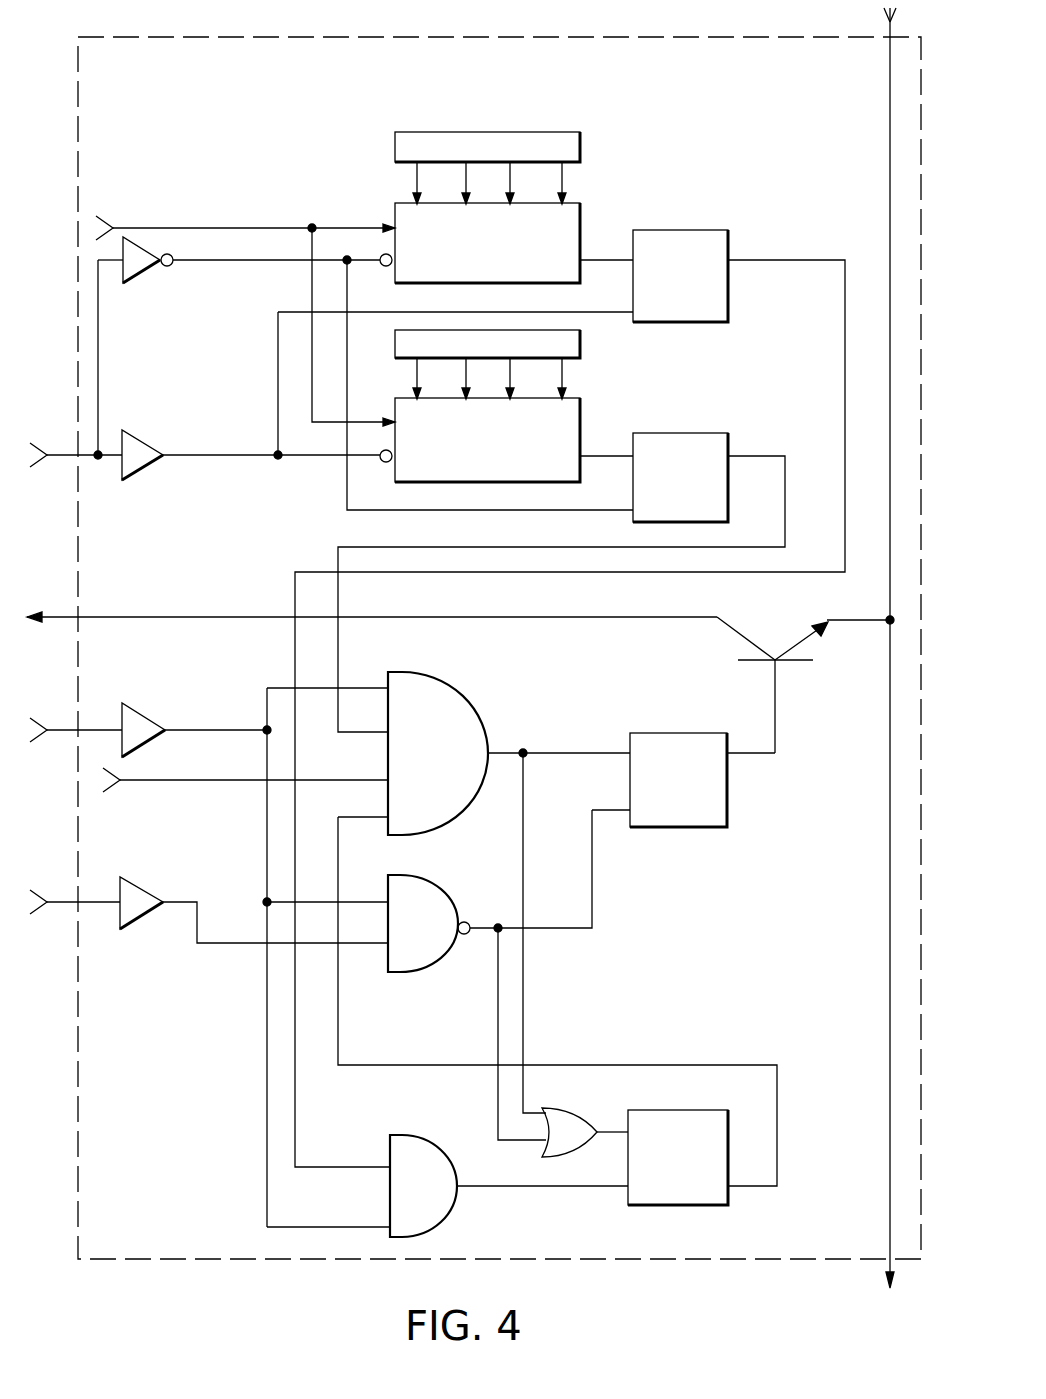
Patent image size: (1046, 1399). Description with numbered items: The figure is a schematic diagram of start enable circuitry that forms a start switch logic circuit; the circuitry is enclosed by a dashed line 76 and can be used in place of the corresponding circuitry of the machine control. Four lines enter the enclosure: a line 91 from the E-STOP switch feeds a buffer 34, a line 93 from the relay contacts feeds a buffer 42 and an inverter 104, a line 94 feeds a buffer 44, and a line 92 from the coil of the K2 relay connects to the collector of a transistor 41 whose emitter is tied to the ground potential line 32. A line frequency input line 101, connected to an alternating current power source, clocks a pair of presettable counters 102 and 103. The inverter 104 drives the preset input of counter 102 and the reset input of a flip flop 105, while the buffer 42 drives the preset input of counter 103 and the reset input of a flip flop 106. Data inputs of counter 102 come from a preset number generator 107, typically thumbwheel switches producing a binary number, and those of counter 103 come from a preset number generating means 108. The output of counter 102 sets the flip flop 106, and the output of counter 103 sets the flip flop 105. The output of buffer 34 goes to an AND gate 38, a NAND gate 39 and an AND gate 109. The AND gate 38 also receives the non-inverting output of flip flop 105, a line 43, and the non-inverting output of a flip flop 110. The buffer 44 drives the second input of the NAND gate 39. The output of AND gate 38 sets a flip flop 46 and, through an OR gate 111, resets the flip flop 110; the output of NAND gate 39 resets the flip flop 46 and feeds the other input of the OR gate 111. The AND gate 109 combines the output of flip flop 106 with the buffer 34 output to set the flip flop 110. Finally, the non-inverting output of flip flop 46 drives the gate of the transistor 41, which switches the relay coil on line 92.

The dashed line 76 is at (284, 37).
The ground potential line 32 is at (892, 40).
The preset number generator 107 is at (572, 141).
The presettable counter 102 is at (582, 219).
The flip flop 106 is at (716, 313).
The line frequency input line 101 is at (160, 228).
The inverter 104 is at (134, 268).
The preset number generating means 108 is at (572, 350).
The presettable counter 103 is at (582, 415).
The flip flop 105 is at (720, 438).
The line 93 is at (72, 453).
The buffer 42 is at (136, 462).
The line 92 is at (74, 616).
The transistor 41 is at (752, 662).
The AND gate 38 is at (446, 692).
The line 91 is at (72, 729).
The buffer 34 is at (138, 720).
The line 43 is at (140, 782).
The flip flop 46 is at (672, 818).
The line 94 is at (72, 902).
The buffer 44 is at (134, 910).
The NAND gate 39 is at (438, 952).
The AND gate 109 is at (426, 1146).
The OR gate 111 is at (564, 1112).
The flip flop 110 is at (698, 1124).